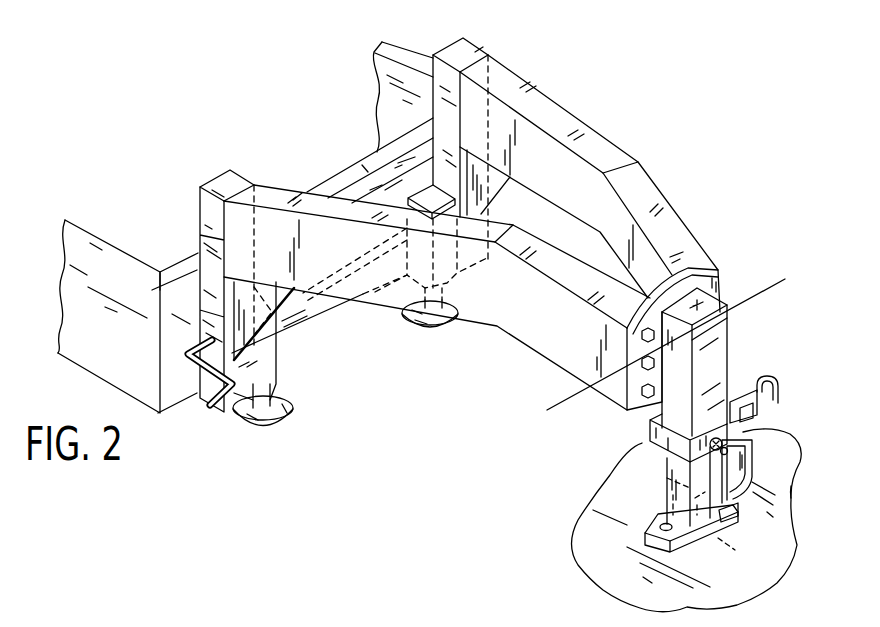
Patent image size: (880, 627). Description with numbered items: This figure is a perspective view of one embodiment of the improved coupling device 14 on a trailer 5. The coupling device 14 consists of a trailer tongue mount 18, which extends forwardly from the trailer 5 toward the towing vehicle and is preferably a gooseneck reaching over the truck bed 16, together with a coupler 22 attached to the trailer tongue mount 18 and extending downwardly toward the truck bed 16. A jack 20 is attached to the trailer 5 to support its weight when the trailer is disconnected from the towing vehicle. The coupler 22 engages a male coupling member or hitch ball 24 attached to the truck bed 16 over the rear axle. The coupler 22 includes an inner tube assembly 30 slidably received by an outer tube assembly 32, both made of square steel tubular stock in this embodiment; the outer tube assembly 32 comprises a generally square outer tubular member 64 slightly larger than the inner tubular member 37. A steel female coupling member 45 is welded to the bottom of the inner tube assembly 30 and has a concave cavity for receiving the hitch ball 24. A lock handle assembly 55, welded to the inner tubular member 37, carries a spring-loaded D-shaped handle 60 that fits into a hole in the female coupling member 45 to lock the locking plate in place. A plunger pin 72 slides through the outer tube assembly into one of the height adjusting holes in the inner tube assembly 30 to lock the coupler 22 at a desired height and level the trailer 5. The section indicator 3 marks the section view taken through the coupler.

The section line 3- 3 is at (792, 281).
The trailer 5 is at (105, 359).
The coupling device 14 is at (707, 184).
The truck bed 16 is at (703, 574).
The trailer tongue mount 18 is at (543, 325).
The jack 20 is at (219, 412).
The coupler 22 is at (716, 391).
The hitch ball 24 is at (735, 550).
The inner tube assembly 30 is at (643, 533).
The outer tube assembly 32 is at (732, 358).
The inner tubular member 37 is at (667, 500).
The female coupling member 45 is at (729, 535).
The lock handle assembly 55 is at (755, 453).
The D-shaped handle 60 is at (792, 492).
The outer tubular member 64 is at (697, 381).
The plunger pin 72 is at (778, 379).